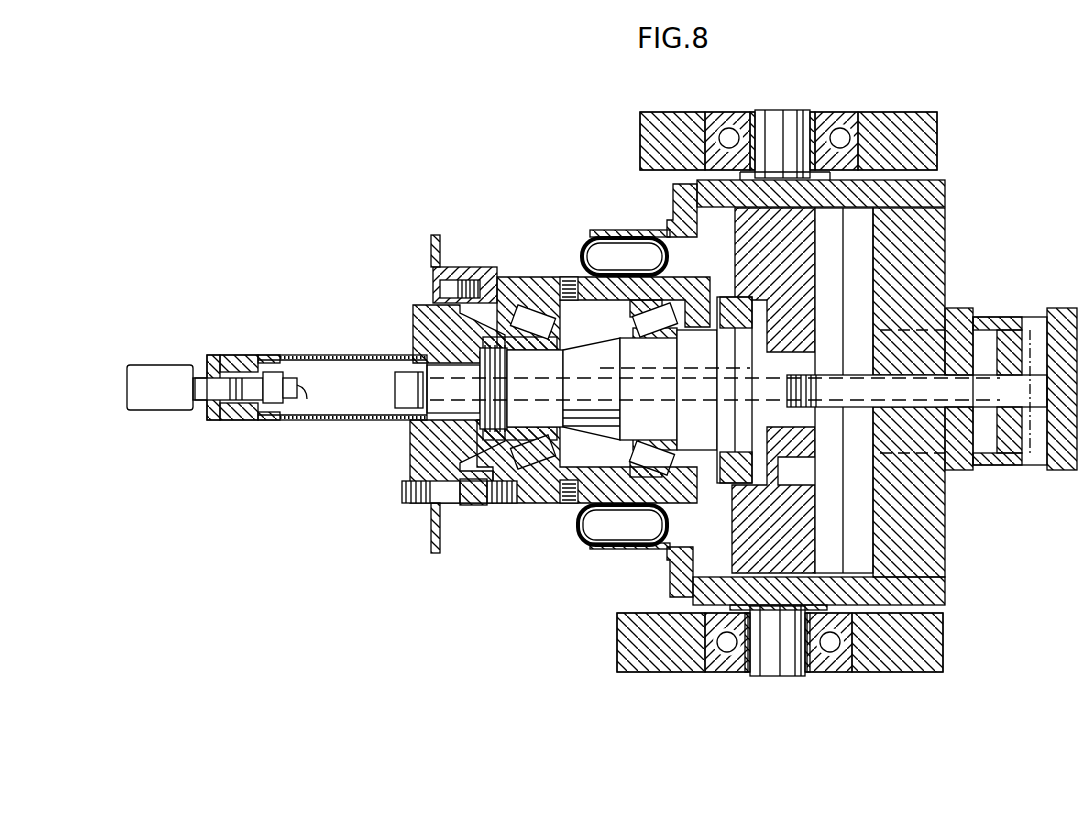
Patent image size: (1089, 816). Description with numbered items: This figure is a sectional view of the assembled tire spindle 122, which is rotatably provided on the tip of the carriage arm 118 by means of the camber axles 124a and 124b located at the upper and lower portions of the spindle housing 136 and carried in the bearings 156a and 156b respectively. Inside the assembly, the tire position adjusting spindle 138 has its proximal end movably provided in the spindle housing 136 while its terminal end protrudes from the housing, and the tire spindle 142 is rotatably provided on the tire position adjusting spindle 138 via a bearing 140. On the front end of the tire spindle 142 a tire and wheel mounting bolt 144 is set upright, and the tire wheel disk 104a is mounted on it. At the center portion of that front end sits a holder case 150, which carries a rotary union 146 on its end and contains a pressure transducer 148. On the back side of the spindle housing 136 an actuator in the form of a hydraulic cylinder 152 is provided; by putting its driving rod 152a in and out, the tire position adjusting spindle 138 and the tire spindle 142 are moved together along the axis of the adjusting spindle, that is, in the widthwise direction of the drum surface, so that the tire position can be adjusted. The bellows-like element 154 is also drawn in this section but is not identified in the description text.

The tire wheel disk 104a is at (430, 540).
The carriage arm 118 is at (893, 135).
The assembled tire spindle 122 is at (468, 265).
The camber axle 124a is at (780, 120).
The camber axle 124b is at (768, 664).
The spindle housing 136 is at (930, 200).
The tire position adjusting spindle 138 is at (595, 360).
The bearing 140 is at (530, 323).
The tire spindle 142 is at (540, 492).
The tire & wheel mounting bolt 144 is at (402, 488).
The rotary union 146 is at (165, 372).
The pressure transducer 148 is at (272, 380).
The holder case 150 is at (352, 357).
The hydraulic cylinder 152 is at (1018, 320).
The driving rod 152a is at (910, 387).
The bellows 154 is at (580, 530).
The bearing 156a is at (735, 128).
The bearing 156b is at (843, 664).